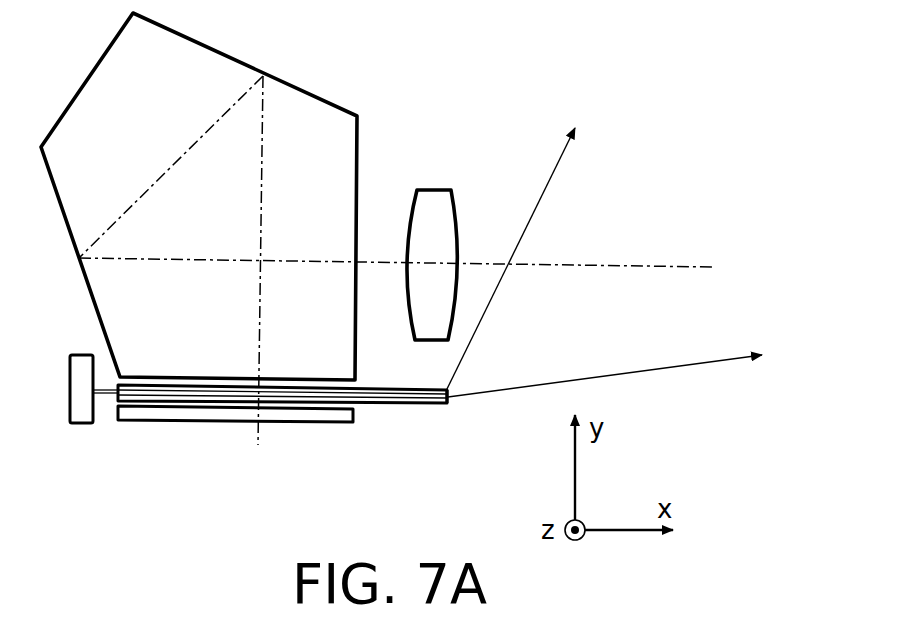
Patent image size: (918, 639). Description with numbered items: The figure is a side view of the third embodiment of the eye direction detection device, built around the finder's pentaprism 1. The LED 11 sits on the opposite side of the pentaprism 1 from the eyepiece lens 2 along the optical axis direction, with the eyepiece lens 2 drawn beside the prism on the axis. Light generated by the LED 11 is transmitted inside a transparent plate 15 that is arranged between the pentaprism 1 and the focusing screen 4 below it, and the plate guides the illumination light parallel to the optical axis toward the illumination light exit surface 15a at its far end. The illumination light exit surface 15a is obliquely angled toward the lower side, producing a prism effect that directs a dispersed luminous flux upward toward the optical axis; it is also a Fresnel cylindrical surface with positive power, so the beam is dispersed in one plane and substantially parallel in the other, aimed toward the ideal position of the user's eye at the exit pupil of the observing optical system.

The pentaprism 1 is at (228, 57).
The eyepiece lens 2 is at (435, 188).
The focusing screen 4 is at (188, 421).
The LED 11 is at (69, 406).
The transparent plate 15 is at (397, 407).
The illumination light exit surface 15a is at (452, 394).